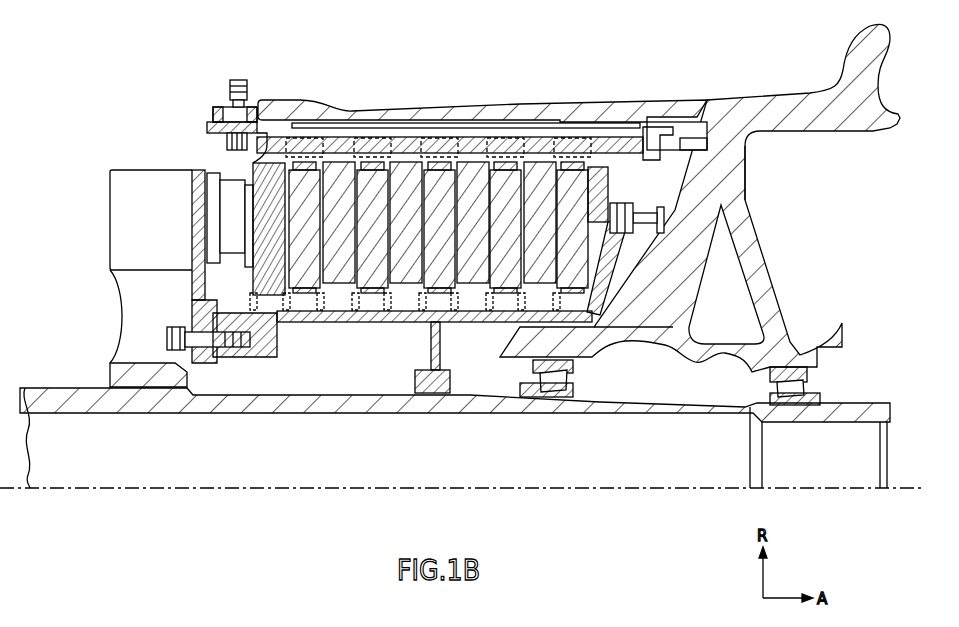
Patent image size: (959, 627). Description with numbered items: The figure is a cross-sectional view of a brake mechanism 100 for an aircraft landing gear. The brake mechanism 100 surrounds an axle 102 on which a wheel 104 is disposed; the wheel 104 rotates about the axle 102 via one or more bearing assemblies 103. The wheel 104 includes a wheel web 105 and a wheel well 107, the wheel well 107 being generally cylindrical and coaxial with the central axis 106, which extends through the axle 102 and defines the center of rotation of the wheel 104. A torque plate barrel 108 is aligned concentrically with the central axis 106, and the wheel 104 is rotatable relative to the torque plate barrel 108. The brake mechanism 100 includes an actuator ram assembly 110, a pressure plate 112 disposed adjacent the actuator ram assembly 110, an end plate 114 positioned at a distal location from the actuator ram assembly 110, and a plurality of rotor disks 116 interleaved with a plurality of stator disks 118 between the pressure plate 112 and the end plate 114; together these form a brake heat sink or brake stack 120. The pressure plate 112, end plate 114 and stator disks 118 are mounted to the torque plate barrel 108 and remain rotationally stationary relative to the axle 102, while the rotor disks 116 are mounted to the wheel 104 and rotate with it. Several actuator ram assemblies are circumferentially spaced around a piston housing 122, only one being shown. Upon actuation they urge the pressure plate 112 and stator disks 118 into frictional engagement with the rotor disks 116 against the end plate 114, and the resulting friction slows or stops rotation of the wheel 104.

The brake mechanism 100 is at (108, 74).
The axle 102 is at (655, 412).
The bearing assemblies 103 is at (800, 382).
The wheel 104 is at (720, 170).
The wheel web 105 is at (733, 155).
The central axis 106 is at (623, 488).
The wheel well 107 is at (517, 107).
The torque plate barrel 108 is at (325, 331).
The actuator ram assembly 110 is at (168, 151).
The pressure plate 112 is at (247, 163).
The end plate 114 is at (608, 175).
The rotor disks 116 is at (305, 176).
The stator disks 118 is at (407, 170).
The brake stack 120 is at (517, 170).
The piston housing 122 is at (115, 205).